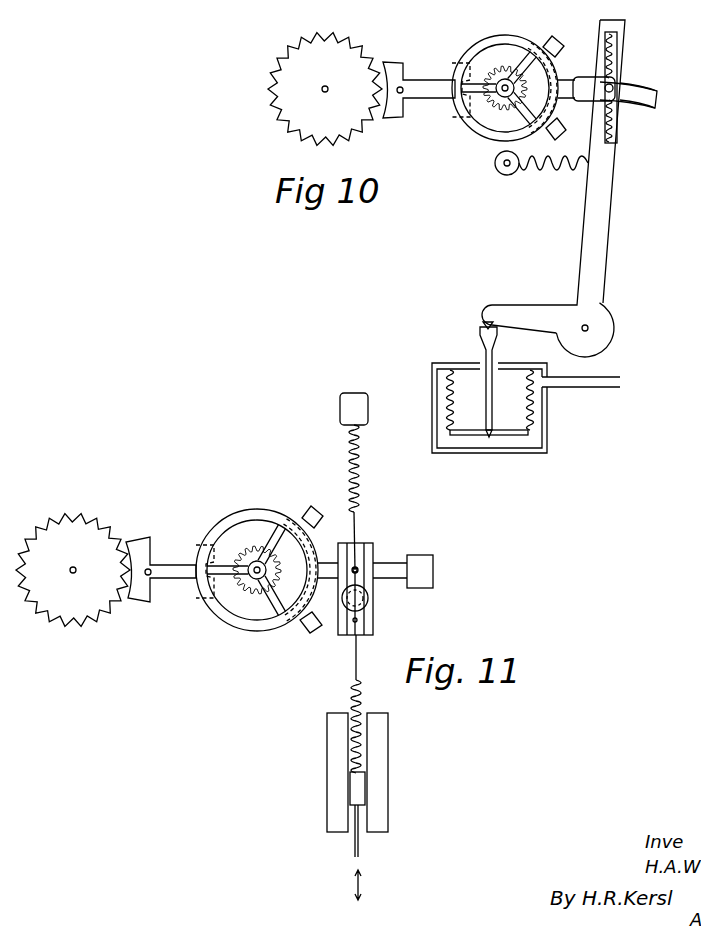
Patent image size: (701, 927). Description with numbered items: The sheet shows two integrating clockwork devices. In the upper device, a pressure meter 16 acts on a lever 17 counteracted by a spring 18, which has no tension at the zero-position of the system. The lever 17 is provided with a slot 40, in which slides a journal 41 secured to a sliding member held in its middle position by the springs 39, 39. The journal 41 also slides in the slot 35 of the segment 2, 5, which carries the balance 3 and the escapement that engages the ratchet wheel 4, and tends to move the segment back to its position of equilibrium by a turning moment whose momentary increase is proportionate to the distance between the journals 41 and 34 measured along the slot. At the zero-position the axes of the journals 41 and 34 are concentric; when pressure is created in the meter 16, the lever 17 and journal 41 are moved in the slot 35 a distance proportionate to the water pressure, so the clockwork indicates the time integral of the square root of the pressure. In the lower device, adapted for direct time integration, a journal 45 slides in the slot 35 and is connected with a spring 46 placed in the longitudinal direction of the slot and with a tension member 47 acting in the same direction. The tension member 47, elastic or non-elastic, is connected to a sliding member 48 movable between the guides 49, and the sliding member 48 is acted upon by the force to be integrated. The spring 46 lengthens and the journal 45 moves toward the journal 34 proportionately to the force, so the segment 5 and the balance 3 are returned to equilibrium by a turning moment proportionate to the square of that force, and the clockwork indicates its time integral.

In FIG. 10, the segment 2 is at (652, 106).
In FIG. 11, the segment 2 is at (390, 566).
In FIG. 10, the balance 3 is at (494, 40).
In FIG. 11, the balance 3 is at (257, 512).
In FIG. 10, the ratchet wheel 4 is at (329, 46).
In FIG. 11, the ratchet wheel 4 is at (68, 523).
In FIG. 10, the segment 5 is at (560, 42).
In FIG. 11, the segment 5 is at (316, 513).
In FIG. 10, the pressure meter 16 is at (437, 399).
In FIG. 10, the lever 17 is at (604, 222).
In FIG. 10, the spring 18 is at (532, 170).
In FIG. 10, the journal 34 is at (585, 80).
In FIG. 11, the journal 34 is at (352, 574).
In FIG. 10, the slot 35 is at (658, 93).
In FIG. 11, the slot 35 is at (360, 551).
In FIG. 10, the springs 39 is at (614, 57).
In FIG. 10, the slot 40 is at (617, 34).
In FIG. 10, the journal 41 is at (621, 85).
In FIG. 11, the journal 45 is at (368, 600).
In FIG. 11, the spring 46 is at (359, 463).
In FIG. 11, the tension member 47 is at (359, 663).
In FIG. 11, the sliding member 48 is at (362, 792).
In FIG. 11, the guides 49 is at (372, 718).